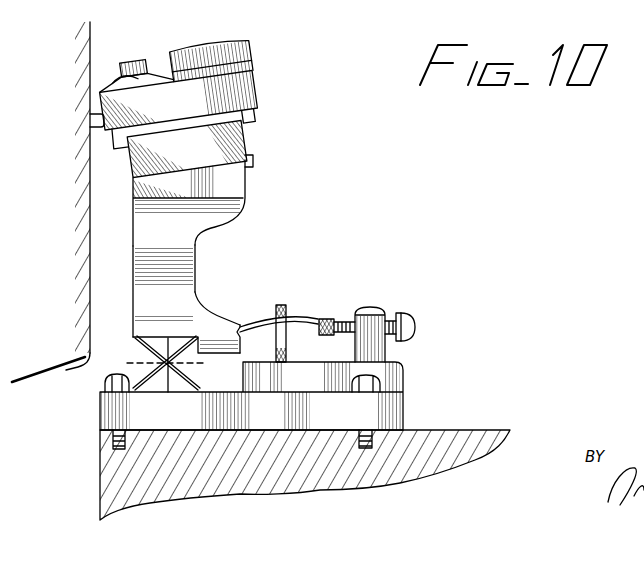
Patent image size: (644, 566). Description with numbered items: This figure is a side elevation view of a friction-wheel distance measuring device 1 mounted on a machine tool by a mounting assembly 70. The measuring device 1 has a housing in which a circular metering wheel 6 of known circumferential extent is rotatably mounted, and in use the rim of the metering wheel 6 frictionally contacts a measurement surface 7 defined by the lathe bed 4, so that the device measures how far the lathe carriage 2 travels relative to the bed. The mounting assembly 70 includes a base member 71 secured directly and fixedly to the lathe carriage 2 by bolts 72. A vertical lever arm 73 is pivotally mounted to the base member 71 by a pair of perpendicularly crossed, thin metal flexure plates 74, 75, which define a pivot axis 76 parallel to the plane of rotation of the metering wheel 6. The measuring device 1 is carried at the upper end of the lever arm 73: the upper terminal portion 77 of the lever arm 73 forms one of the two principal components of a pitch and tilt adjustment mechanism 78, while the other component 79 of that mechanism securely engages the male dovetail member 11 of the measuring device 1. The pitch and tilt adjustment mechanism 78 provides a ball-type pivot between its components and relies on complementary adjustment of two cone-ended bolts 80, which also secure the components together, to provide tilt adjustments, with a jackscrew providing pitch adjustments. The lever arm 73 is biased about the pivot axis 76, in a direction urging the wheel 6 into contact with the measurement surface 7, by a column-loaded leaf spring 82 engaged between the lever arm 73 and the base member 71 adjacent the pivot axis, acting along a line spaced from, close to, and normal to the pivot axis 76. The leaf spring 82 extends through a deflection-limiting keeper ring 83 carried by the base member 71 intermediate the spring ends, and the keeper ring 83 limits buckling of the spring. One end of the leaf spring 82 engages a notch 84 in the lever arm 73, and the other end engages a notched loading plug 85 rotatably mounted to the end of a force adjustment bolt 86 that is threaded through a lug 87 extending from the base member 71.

The friction-wheel distance measuring device 1 is at (270, 80).
The lathe carriage 2 is at (467, 430).
The lathe bed 4 is at (58, 363).
The metering wheel 6 is at (90, 122).
The measurement surface 7 is at (92, 257).
The male dovetail member 11 is at (257, 122).
The mounting assembly 70 is at (191, 288).
The base member 71 is at (405, 408).
The bolts 72 is at (104, 392).
The vertical lever arm 73 is at (194, 239).
The flexure plate 74 is at (141, 347).
The flexure plate 75 is at (180, 335).
The pivot axis 76 is at (132, 364).
The upper terminal portion 77 is at (245, 184).
The pitch and tilt adjustment mechanism 78 is at (215, 108).
The other component 79 is at (244, 136).
The cone-ended bolts 80 is at (272, 162).
The leaf spring 82 is at (296, 321).
The keeper ring 83 is at (282, 303).
The notch 84 is at (238, 327).
The notched loading plug 85 is at (330, 320).
The force adjustment bolt 86 is at (407, 313).
The lug 87 is at (370, 308).